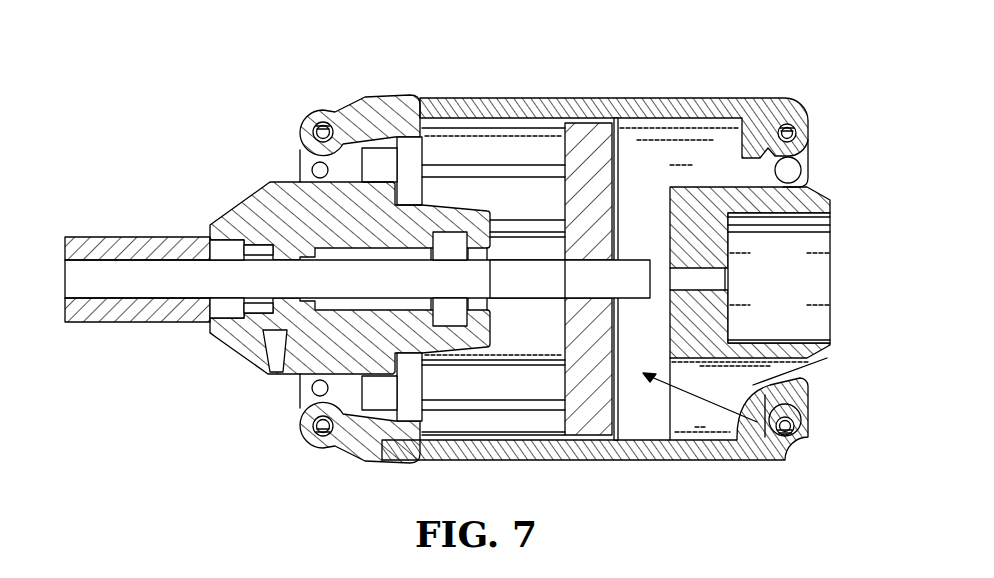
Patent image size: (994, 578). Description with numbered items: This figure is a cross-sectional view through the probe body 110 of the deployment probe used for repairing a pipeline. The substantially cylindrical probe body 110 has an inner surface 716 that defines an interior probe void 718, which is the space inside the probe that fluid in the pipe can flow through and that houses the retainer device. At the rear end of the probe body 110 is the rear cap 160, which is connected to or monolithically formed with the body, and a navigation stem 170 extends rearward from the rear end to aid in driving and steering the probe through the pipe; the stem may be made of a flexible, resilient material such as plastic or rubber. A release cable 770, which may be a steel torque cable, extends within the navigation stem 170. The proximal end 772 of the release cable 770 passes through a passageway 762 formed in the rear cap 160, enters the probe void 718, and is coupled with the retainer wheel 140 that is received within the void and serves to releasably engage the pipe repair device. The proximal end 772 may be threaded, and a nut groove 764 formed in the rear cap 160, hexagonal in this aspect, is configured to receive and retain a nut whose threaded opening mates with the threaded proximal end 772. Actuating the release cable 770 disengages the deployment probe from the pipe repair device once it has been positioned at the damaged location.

The probe body 110 is at (688, 98).
The retainer wheel 140 is at (600, 375).
The rear cap 160 is at (313, 363).
The navigation stem 170 is at (340, 311).
The inner surface 716 is at (636, 342).
The probe void 718 is at (783, 447).
The passageway 762 is at (230, 308).
The nut groove 764 is at (440, 322).
The release cable 770 is at (143, 237).
The proximal end 772 is at (507, 288).